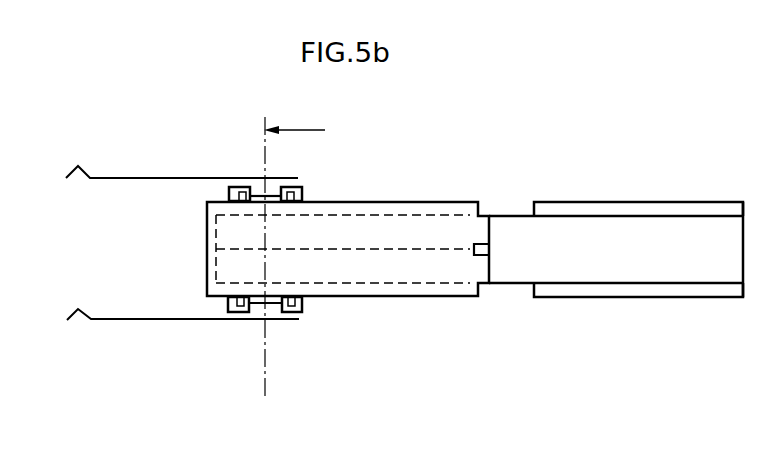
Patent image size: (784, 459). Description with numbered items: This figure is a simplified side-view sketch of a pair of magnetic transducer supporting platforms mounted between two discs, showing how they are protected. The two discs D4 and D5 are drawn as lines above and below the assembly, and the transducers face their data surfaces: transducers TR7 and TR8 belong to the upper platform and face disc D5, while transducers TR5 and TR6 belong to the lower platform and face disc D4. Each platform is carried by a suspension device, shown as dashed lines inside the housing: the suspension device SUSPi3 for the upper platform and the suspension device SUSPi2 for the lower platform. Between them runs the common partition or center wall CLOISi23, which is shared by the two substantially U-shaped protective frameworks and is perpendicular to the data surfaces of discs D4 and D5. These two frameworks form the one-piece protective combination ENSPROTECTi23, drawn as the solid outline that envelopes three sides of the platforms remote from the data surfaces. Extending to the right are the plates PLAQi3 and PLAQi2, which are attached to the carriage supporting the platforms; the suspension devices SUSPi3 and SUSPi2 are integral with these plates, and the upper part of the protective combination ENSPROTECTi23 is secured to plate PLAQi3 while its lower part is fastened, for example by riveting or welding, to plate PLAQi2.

The disc D5 is at (132, 160).
The disc D4 is at (122, 319).
The transducer TR7 is at (242, 189).
The transducer TR8 is at (291, 189).
The transducer TR5 is at (238, 313).
The transducer TR6 is at (290, 313).
The one-piece protective combination ENSPROTECTi23 is at (338, 200).
The suspension device SUSPi3 is at (356, 215).
The suspension device SUSPi2 is at (362, 284).
The common partition or center wall CLOISi23 is at (413, 250).
The plate PLAQi3 is at (581, 203).
The plate PLAQi2 is at (579, 297).